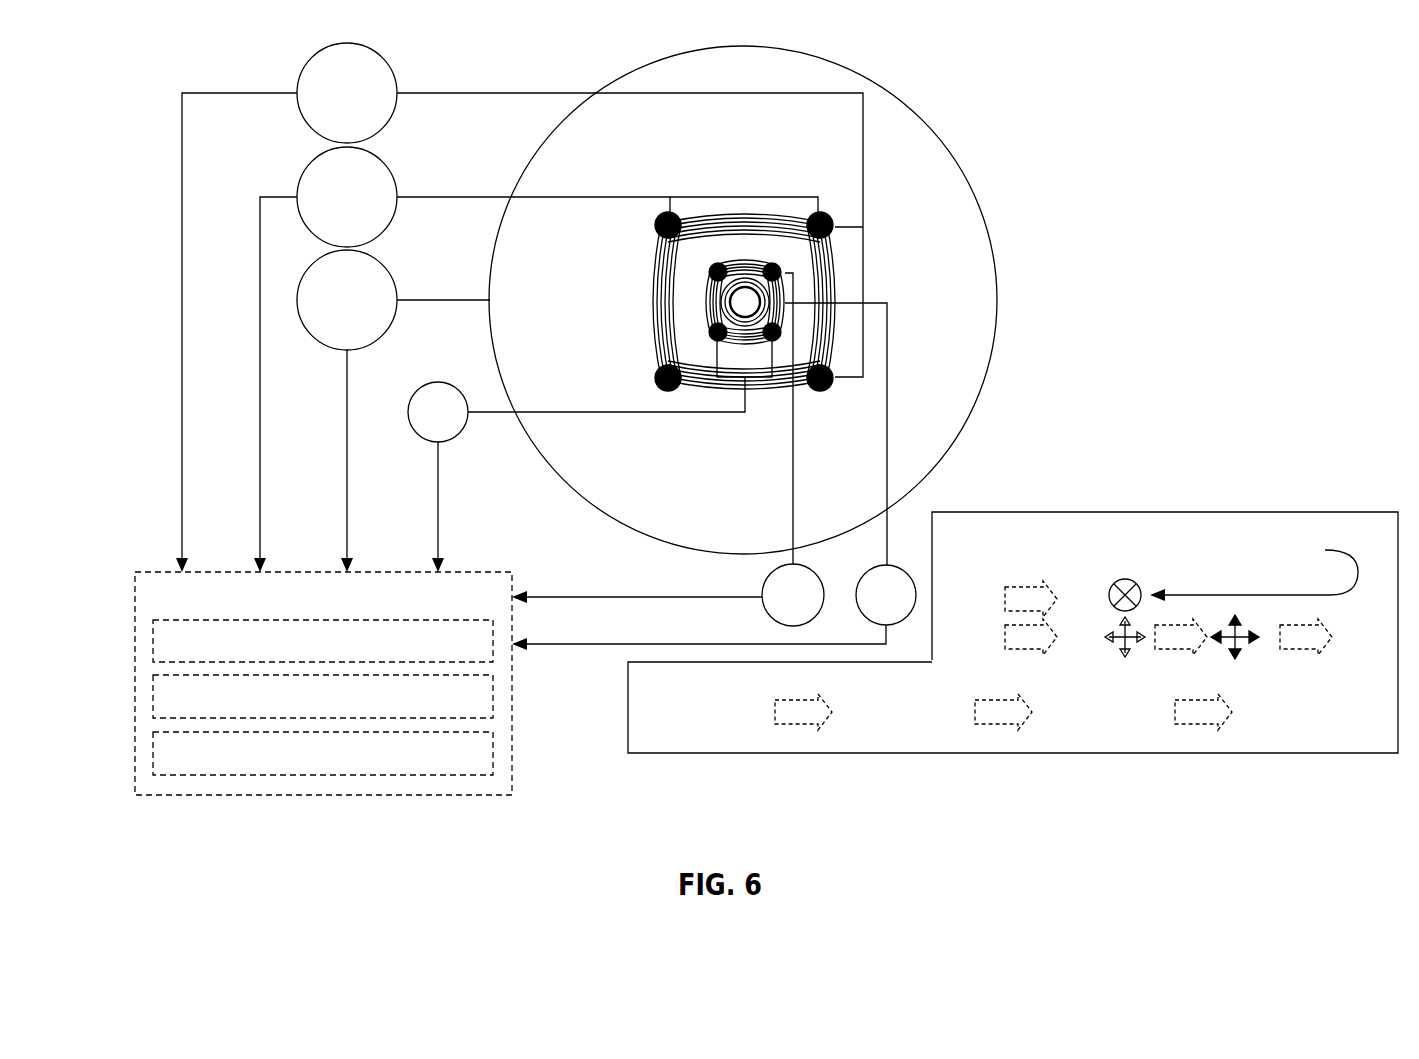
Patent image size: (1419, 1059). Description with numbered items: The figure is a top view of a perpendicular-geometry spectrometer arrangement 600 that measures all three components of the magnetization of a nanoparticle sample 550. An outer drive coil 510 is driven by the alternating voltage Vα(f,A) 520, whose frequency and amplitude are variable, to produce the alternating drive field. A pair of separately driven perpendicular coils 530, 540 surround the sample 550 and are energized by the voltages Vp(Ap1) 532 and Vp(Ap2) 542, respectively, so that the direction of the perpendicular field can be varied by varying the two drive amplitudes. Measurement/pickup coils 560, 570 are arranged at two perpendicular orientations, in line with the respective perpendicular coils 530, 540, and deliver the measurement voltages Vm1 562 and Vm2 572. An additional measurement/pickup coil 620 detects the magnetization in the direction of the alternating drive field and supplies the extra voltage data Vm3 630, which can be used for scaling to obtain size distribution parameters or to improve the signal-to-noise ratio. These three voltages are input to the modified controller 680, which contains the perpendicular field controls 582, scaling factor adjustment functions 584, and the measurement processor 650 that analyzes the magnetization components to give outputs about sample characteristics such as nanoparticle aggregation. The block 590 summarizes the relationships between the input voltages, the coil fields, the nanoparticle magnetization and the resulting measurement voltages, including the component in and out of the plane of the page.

The outer drive coil 510 is at (838, 58).
The spectrometer arrangement 600 is at (990, 157).
The voltage Vp(Ap1) 532 is at (383, 62).
The voltage Vp(Ap2) 542 is at (383, 166).
The voltage Vα(f,A) 520 is at (383, 268).
The measurement voltage Vm2 572 is at (445, 383).
The perpendicular coil 530 is at (660, 231).
The perpendicular coil 540 is at (655, 290).
The sample 550 is at (745, 266).
The measurement/pickup coil 560 is at (775, 270).
The measurement/pickup coil 570 is at (705, 318).
The additional measurement/pickup coil 620 is at (705, 350).
The measurement voltage Vm1 562 is at (767, 609).
The voltage data Vm3 630 is at (900, 568).
The modified controller 680 is at (368, 663).
The perpendicular field controls 582 is at (495, 655).
The scaling factor adjustment functions 584 is at (495, 710).
The measurement processor 650 is at (495, 768).
The block 590 is at (1318, 505).